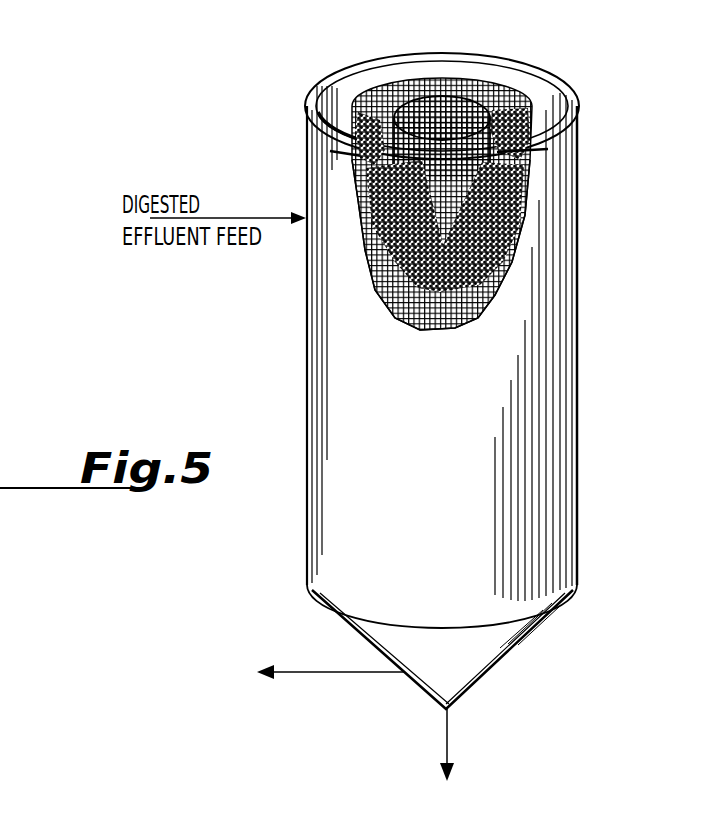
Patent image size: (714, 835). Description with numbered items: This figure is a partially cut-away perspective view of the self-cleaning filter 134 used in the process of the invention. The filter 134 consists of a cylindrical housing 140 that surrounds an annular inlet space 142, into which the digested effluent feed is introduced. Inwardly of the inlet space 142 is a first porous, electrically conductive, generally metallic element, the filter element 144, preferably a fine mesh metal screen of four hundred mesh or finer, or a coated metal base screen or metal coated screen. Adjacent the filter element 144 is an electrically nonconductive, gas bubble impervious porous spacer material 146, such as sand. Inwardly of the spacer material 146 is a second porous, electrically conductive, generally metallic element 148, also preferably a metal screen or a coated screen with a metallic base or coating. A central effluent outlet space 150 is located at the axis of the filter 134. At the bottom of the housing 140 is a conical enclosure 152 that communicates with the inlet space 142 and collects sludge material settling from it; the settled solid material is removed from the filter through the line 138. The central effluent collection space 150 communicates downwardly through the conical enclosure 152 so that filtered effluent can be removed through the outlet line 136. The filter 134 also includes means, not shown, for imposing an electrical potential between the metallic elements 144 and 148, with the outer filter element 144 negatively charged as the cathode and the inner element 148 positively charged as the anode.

The self-cleaning filter 134 is at (448, 434).
The outlet line 136 is at (450, 735).
The line 138 is at (340, 676).
The cylindrical housing 140 is at (310, 92).
The annular inlet space 142 is at (362, 85).
The filter element 144 is at (492, 82).
The spacer material 146 is at (370, 262).
The second porous sheet element 148 is at (530, 98).
The central effluent outlet space 150 is at (435, 120).
The conical enclosure 152 is at (520, 647).